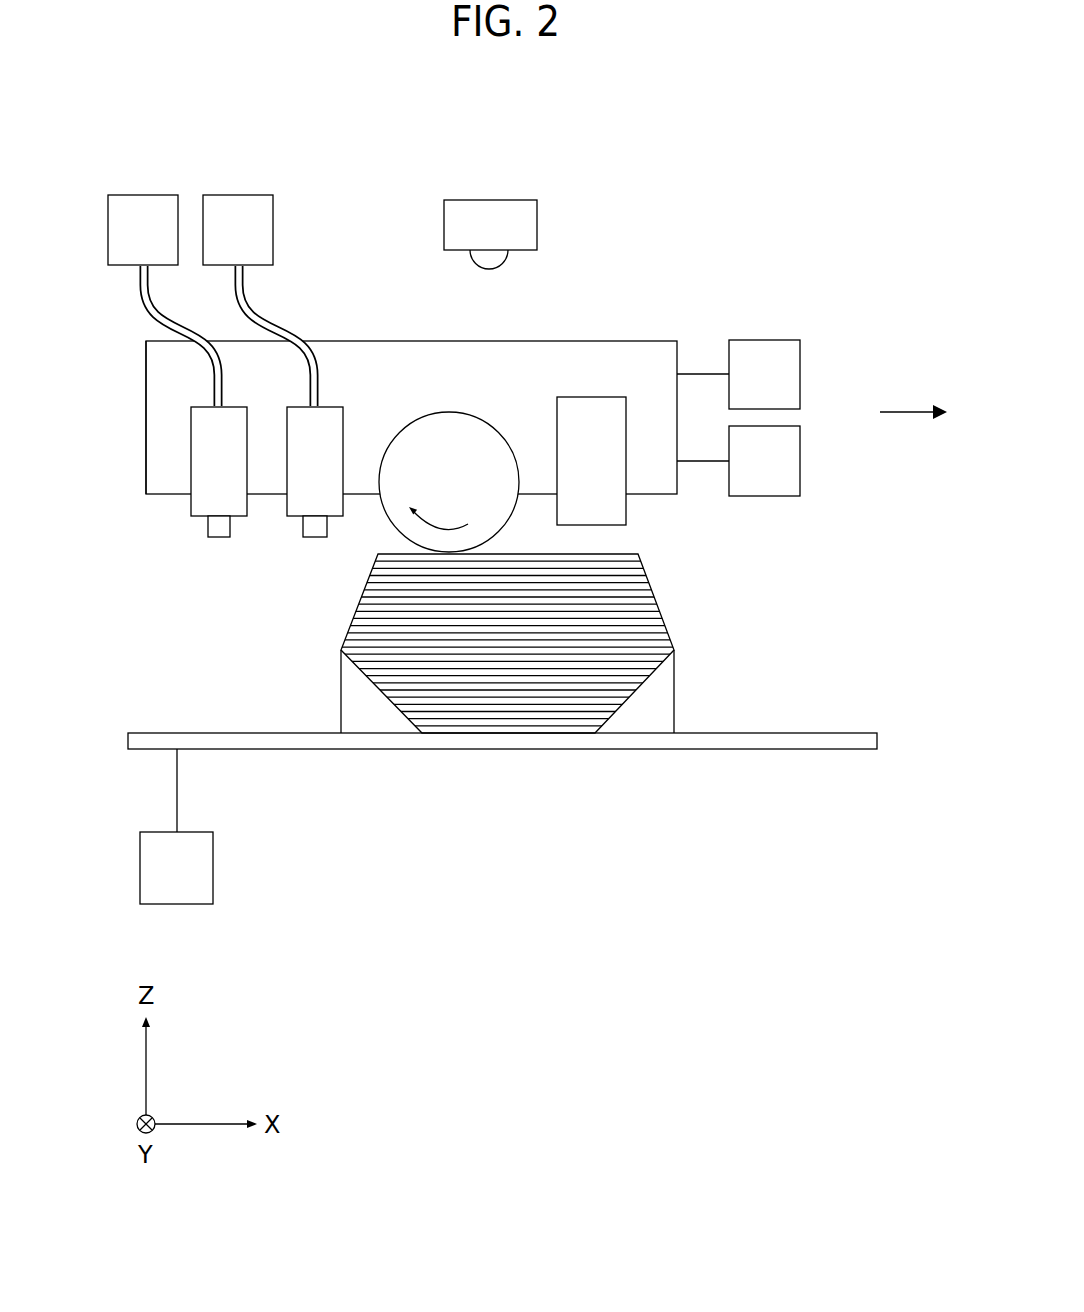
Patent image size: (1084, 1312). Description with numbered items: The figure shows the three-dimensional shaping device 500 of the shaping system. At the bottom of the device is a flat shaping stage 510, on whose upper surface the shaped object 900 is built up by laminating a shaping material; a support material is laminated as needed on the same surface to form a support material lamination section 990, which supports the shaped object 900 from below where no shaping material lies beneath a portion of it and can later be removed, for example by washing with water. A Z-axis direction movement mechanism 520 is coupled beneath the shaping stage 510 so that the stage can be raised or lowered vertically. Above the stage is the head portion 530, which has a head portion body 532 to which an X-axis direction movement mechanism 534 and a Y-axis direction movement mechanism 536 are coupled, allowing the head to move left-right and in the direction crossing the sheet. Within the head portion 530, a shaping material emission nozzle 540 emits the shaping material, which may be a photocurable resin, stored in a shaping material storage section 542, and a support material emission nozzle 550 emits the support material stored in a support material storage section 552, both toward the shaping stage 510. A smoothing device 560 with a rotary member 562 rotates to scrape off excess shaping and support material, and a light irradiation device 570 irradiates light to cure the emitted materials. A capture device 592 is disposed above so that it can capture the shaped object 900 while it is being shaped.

The three-dimensional shaping device 500 is at (505, 316).
The shaping stage 510 is at (226, 733).
The Z-axis direction movement mechanism 520 is at (213, 870).
The head portion 530 is at (140, 387).
The head portion body 532 is at (146, 476).
The X-axis direction movement mechanism 534 is at (802, 360).
The Y-axis direction movement mechanism 536 is at (802, 465).
The shaping material emission nozzle 540 is at (348, 425).
The shaping material storage section 542 is at (273, 220).
The support material emission nozzle 550 is at (190, 507).
The support material storage section 552 is at (146, 195).
The smoothing device 560 is at (508, 426).
The rotary member 562 is at (420, 416).
The light irradiation device 570 is at (627, 510).
The capture device 592 is at (516, 200).
The shaped object 900 is at (650, 605).
The support material lamination section 990 is at (677, 687).